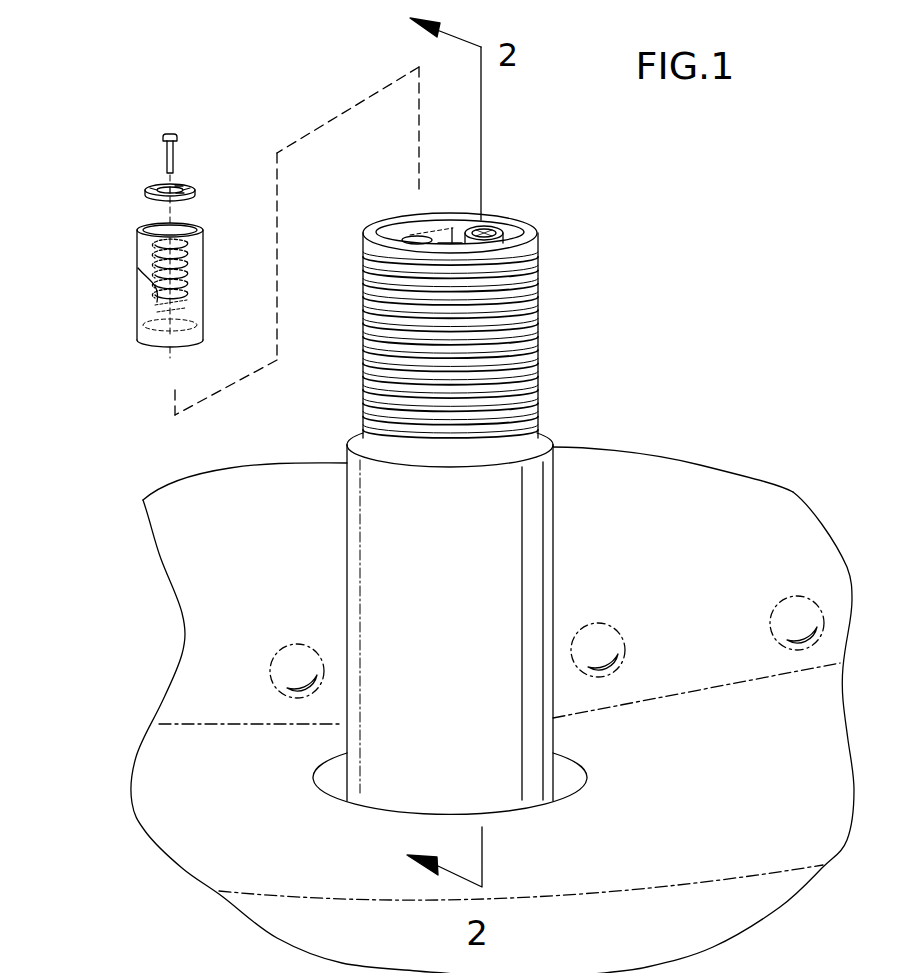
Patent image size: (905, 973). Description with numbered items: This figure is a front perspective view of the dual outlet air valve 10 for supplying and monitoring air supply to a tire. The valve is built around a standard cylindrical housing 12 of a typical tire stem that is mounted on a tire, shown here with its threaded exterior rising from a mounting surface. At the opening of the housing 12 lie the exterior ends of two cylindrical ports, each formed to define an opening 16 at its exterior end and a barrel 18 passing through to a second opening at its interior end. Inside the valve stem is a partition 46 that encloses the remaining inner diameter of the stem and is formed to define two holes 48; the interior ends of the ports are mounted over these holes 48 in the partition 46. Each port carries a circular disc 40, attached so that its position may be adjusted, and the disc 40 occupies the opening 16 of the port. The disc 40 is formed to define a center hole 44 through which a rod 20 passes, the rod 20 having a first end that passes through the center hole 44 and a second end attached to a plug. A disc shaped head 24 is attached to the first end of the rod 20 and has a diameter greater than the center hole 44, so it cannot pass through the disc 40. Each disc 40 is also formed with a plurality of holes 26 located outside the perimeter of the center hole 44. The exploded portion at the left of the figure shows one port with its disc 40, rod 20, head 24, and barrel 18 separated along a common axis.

The dual outlet air valve 10 is at (555, 533).
The cylindrical housing 12 is at (540, 256).
The opening 16 is at (190, 228).
The barrel 18 is at (157, 292).
The rod 20 is at (163, 152).
The disc shaped head 24 is at (167, 133).
The holes 26 is at (197, 178).
The circular disc 40 is at (143, 190).
The center hole 44 is at (163, 186).
The partition 46 is at (450, 240).
The holes 48 is at (412, 235).